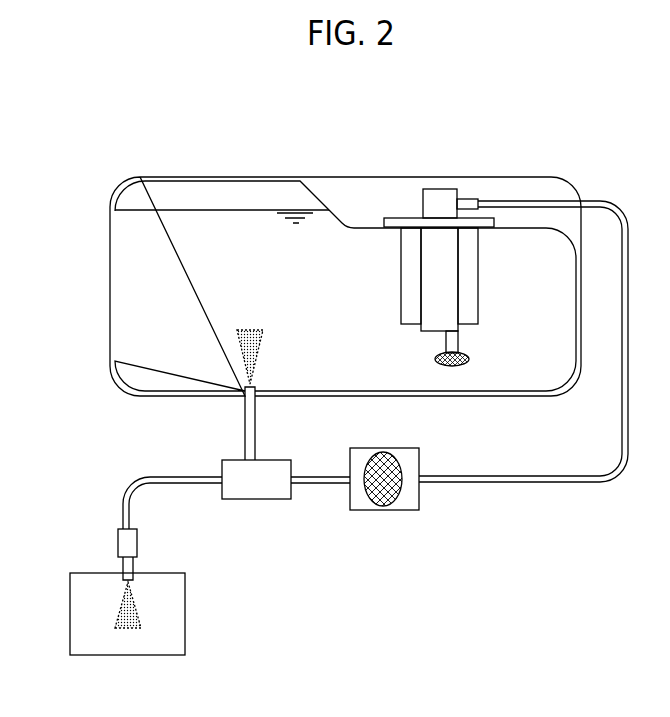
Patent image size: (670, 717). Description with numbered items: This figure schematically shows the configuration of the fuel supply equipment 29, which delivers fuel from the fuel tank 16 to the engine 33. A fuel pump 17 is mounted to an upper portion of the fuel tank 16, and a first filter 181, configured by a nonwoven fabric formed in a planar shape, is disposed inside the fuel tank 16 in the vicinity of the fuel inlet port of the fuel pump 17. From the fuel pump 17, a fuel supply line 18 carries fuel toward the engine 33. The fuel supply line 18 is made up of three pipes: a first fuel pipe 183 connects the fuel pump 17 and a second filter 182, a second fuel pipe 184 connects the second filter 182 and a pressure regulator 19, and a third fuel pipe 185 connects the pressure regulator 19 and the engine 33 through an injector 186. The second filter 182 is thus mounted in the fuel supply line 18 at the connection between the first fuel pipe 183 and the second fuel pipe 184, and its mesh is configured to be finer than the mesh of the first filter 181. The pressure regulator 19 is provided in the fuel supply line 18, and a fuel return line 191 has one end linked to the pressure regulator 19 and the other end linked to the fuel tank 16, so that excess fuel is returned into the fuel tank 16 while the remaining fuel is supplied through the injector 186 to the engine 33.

The fuel supply equipment 29 is at (94, 165).
The fuel tank 16 is at (110, 247).
The fuel pump 17 is at (427, 208).
The first filter 181 is at (460, 364).
The fuel supply line 18 is at (470, 585).
The first fuel pipe 183 is at (477, 484).
The second filter 182 is at (398, 495).
The second fuel pipe 184 is at (325, 484).
The third fuel pipe 185 is at (207, 484).
The pressure regulator 19 is at (258, 494).
The fuel return line 191 is at (248, 429).
The injector 186 is at (122, 542).
The engine 33 is at (70, 617).